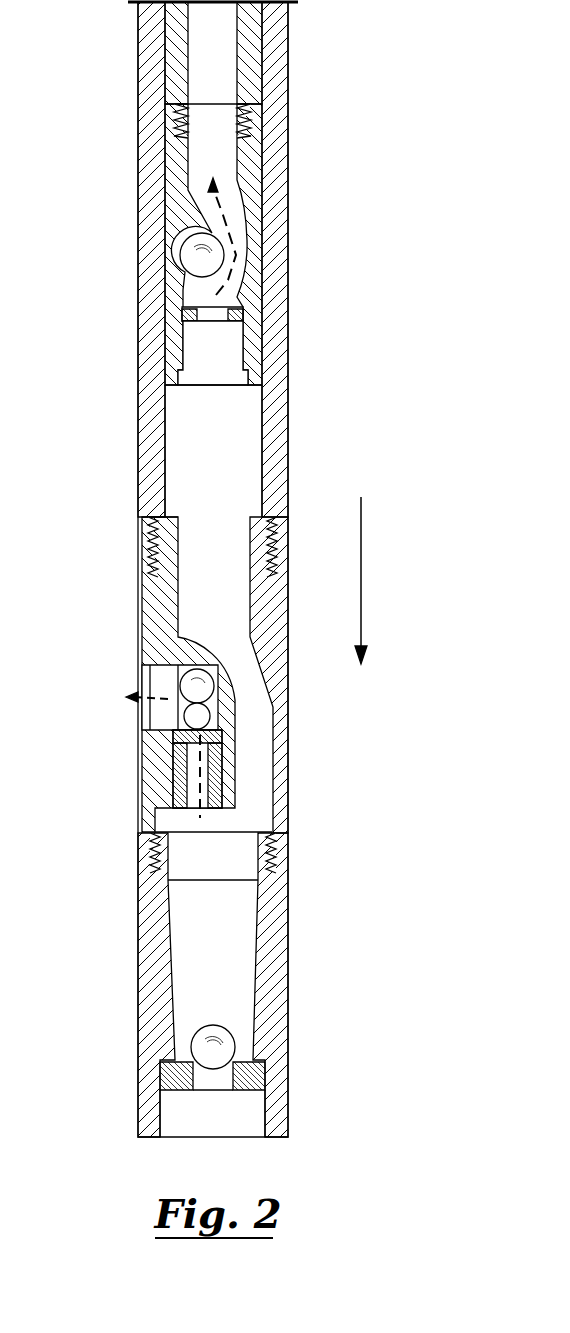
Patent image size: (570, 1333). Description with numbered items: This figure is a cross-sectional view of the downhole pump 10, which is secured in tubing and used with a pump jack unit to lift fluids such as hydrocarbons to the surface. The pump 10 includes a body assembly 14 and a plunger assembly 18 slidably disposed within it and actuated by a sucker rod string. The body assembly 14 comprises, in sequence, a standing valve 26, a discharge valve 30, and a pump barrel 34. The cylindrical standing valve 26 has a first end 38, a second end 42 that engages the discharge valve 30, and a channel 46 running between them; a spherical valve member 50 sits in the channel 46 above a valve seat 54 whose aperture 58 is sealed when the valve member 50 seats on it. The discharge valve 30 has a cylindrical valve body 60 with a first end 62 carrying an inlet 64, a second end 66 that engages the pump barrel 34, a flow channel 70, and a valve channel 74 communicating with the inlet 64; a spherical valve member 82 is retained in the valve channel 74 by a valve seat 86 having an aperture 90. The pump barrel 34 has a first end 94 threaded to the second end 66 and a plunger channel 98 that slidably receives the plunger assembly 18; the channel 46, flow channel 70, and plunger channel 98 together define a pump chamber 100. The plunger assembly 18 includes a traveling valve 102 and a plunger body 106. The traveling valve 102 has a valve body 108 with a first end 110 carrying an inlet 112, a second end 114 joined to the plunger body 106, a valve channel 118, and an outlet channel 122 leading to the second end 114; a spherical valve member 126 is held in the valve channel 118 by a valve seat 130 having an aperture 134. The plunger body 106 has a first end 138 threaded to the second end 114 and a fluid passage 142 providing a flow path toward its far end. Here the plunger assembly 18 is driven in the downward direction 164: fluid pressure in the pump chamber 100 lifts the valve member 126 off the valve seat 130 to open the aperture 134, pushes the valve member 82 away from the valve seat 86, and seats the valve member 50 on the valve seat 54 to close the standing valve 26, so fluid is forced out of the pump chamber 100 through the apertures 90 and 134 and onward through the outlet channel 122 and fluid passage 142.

The downhole pump 10 is at (47, 166).
The body assembly 14 is at (290, 815).
The plunger assembly 18 is at (265, 163).
The standing valve 26 is at (290, 918).
The discharge valve 30 is at (290, 752).
The pump barrel 34 is at (290, 430).
The first end 38 is at (167, 712).
The second end 42 is at (270, 870).
The channel 46 is at (250, 978).
The valve member 50 is at (220, 1030).
The valve seat 54 is at (178, 1082).
The aperture 58 is at (197, 1080).
The valve body 60 is at (282, 680).
The first end 62 is at (148, 870).
The inlet 64 is at (162, 827).
The second end 66 is at (143, 552).
The flow channel 70 is at (152, 612).
The valve channel 74 is at (183, 740).
The valve member 82 is at (198, 668).
The valve seat 86 is at (180, 743).
The aperture 90 is at (172, 788).
The first end 94 is at (143, 540).
The plunger channel 98 is at (168, 442).
The pump chamber 100 is at (262, 492).
The traveling valve 102 is at (265, 282).
The plunger body 106 is at (258, 62).
The valve body 108 is at (250, 220).
The first end 110 is at (262, 373).
The inlet 112 is at (203, 377).
The second end 114 is at (265, 115).
The valve channel 118 is at (185, 291).
The outlet channel 122 is at (258, 190).
The valve member 126 is at (180, 248).
The valve seat 130 is at (248, 300).
The aperture 134 is at (217, 360).
The first end 138 is at (168, 130).
The fluid passage 142 is at (180, 67).
The downward direction 164 is at (352, 585).